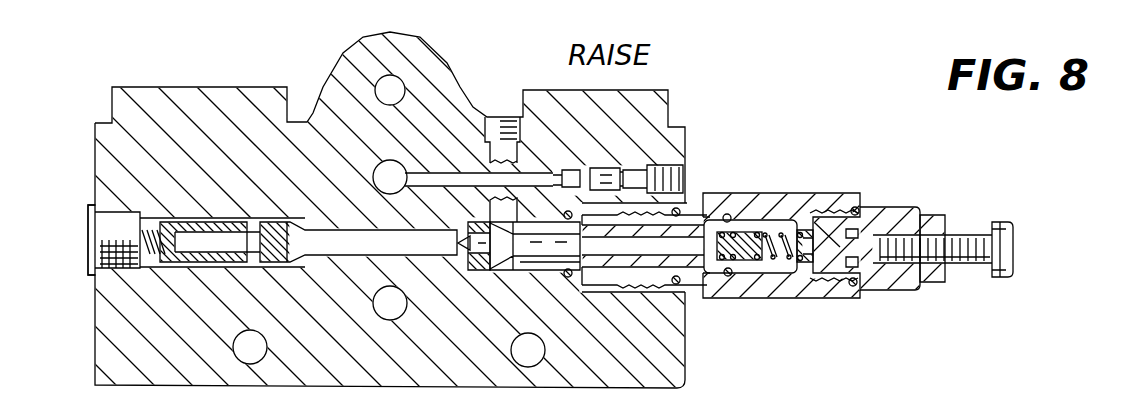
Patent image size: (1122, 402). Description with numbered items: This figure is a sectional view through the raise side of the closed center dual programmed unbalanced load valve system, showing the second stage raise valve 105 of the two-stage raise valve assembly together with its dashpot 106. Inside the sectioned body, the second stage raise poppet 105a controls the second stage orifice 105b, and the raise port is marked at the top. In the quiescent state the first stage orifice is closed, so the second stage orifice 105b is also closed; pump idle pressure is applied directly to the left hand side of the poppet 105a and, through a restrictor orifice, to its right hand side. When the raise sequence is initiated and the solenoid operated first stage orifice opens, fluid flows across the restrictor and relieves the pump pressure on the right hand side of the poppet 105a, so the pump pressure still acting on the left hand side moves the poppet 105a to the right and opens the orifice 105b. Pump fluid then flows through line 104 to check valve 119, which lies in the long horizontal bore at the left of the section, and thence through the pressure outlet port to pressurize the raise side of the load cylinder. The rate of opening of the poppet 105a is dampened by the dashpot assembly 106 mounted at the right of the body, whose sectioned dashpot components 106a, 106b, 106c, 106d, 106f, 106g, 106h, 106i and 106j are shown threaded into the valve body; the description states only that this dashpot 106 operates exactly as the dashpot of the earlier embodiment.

The line 104 is at (325, 258).
The valve body 105 is at (742, 111).
The second stage raise poppet 105a is at (527, 258).
The second stage orifice 105b is at (482, 256).
The dashpot assembly 106 is at (761, 233).
The cartridge housing 106a is at (828, 298).
The seal ring 106b is at (736, 277).
The valve seat 106c is at (790, 225).
The piston 106d is at (725, 207).
The spring 106f is at (798, 222).
The adjusting plug 106g is at (863, 242).
The o-ring seal 106h is at (855, 207).
The adjusting screw 106i is at (990, 222).
The lock nut 106j is at (937, 279).
The check valve 119 is at (220, 258).